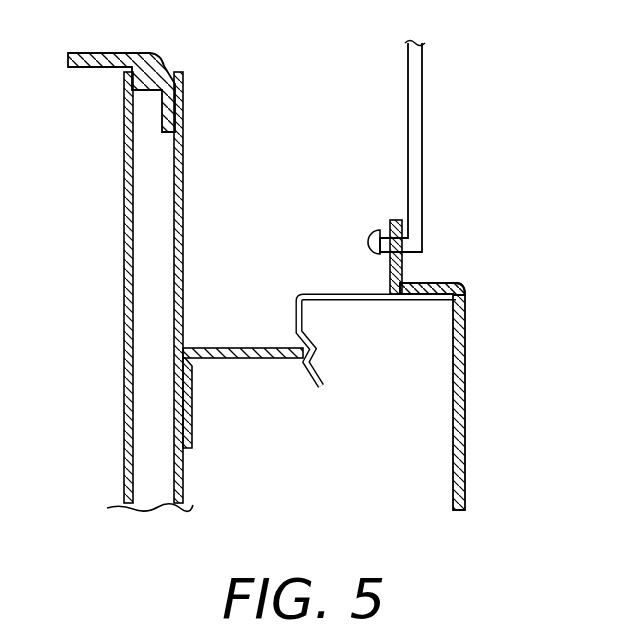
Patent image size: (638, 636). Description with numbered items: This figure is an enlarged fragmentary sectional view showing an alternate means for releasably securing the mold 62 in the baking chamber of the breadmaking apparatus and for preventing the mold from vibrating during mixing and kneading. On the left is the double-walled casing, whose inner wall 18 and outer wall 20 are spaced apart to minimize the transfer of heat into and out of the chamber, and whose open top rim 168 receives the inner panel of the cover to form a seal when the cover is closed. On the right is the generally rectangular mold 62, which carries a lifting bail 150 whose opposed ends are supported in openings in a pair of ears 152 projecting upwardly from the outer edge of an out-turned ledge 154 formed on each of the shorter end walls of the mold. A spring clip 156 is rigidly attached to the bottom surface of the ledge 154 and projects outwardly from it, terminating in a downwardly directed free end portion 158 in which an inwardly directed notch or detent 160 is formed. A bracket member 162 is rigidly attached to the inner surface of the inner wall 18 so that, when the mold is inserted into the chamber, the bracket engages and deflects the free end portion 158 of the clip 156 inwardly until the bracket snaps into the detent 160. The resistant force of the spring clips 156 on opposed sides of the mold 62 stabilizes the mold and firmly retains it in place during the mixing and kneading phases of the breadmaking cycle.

The inner wall 18 is at (183, 479).
The outer wall 20 is at (125, 449).
The mold 62 is at (465, 440).
The lifting bail 150 is at (412, 148).
The ear 152 is at (390, 228).
The out-turned ledge 154 is at (435, 286).
The spring clip 156 is at (366, 302).
The free end portion 158 is at (320, 386).
The detent 160 is at (318, 367).
The bracket member 162 is at (252, 346).
The open top rim 168 is at (151, 55).